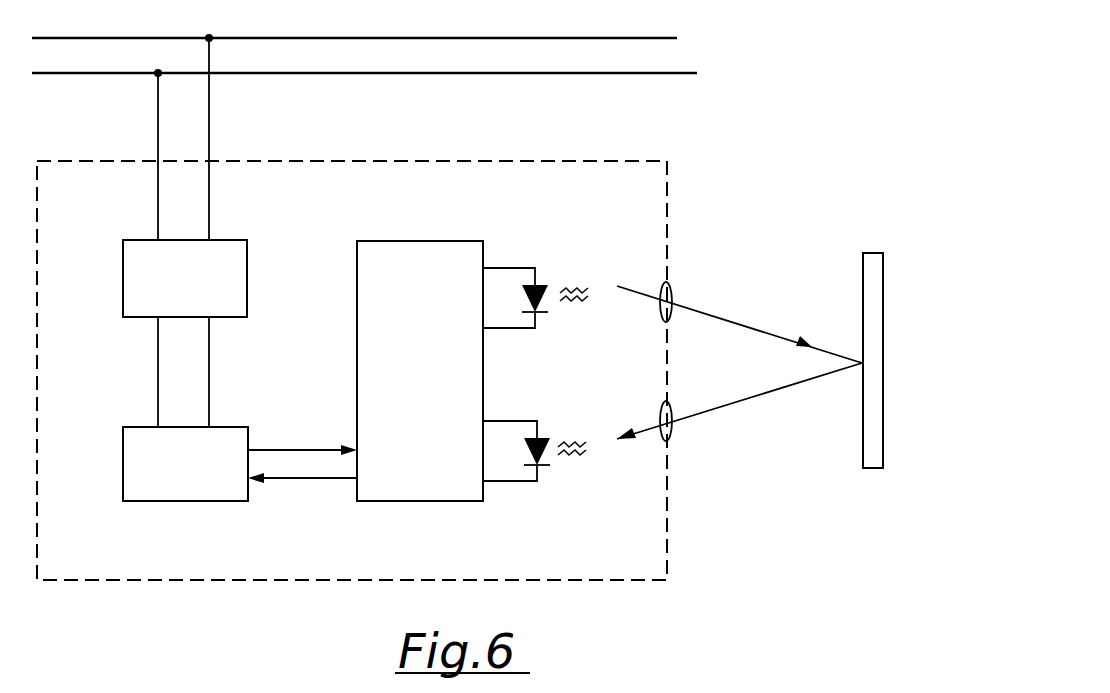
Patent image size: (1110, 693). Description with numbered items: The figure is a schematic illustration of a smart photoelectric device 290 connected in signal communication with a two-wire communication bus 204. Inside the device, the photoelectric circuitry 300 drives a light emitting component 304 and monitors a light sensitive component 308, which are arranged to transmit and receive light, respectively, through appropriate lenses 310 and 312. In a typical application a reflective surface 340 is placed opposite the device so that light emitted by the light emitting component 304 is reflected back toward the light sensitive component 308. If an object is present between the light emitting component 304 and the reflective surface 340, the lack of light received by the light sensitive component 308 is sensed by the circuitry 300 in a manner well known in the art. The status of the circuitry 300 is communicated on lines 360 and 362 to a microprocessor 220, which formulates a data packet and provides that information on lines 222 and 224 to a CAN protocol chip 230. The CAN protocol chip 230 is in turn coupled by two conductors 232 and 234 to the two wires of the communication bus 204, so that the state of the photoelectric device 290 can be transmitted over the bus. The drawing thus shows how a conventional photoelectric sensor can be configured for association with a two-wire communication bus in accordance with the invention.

The two-wire communication bus 204 is at (686, 58).
The microprocessor 220 is at (192, 501).
The line 222 is at (158, 354).
The line 224 is at (209, 354).
The CAN protocol chip 230 is at (247, 277).
The power line conductor 232 is at (209, 200).
The power line conductor 234 is at (158, 208).
The smart photoelectric device 290 is at (668, 557).
The circuitry 300 is at (437, 240).
The light emitting component 304 is at (545, 282).
The light sensitive component 308 is at (548, 466).
The lens 310 is at (672, 282).
The lens 312 is at (672, 440).
The reflective surface 340 is at (863, 280).
The line 360 is at (310, 479).
The line 362 is at (297, 449).